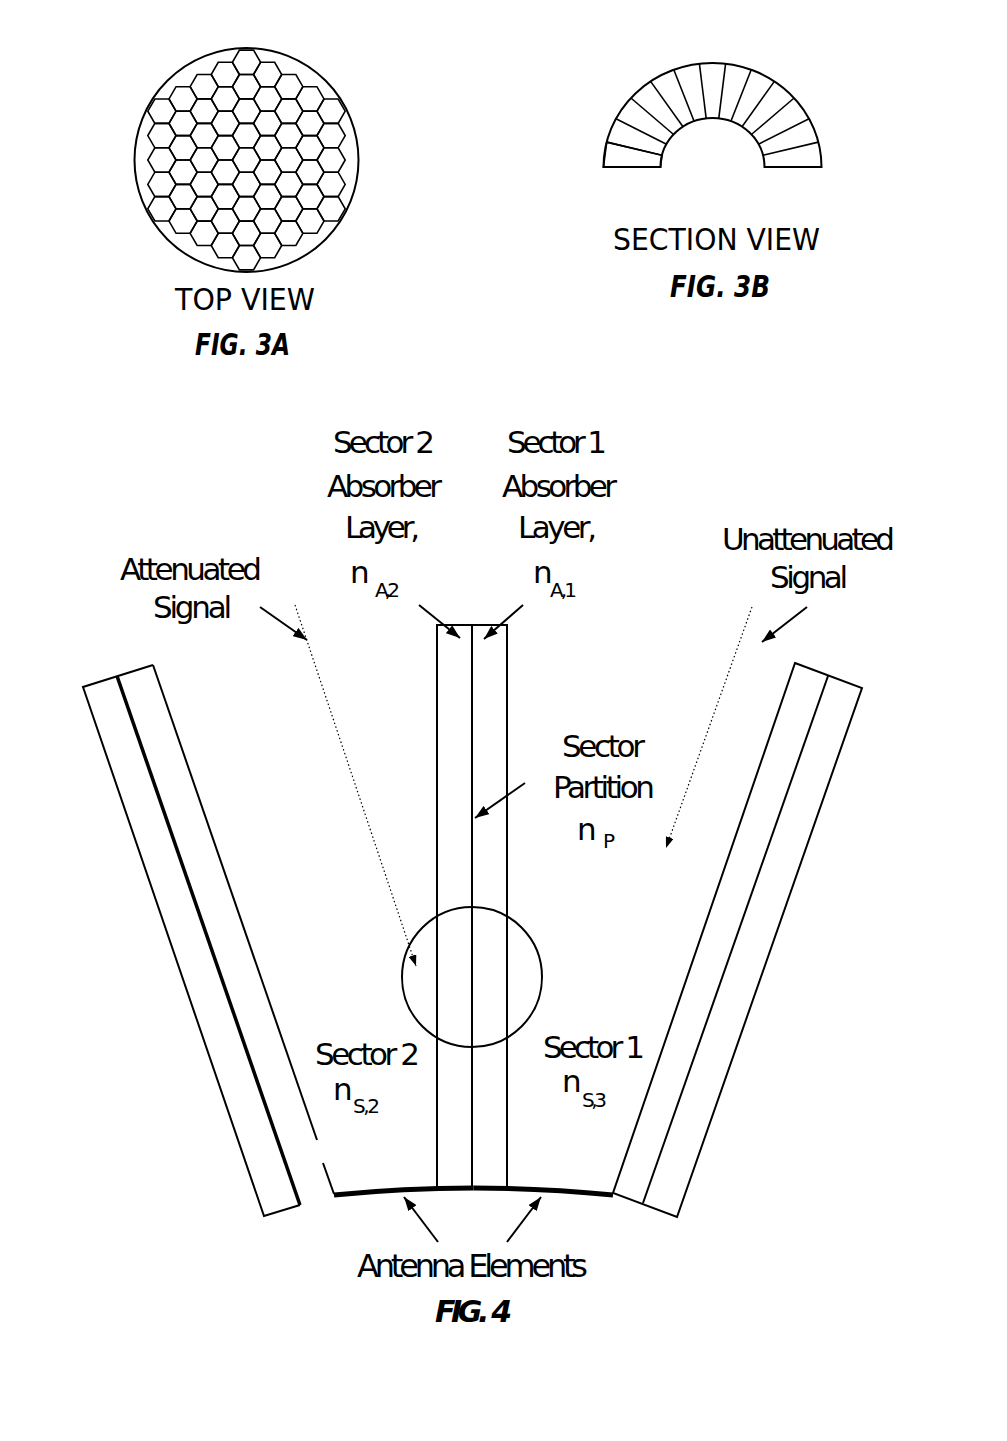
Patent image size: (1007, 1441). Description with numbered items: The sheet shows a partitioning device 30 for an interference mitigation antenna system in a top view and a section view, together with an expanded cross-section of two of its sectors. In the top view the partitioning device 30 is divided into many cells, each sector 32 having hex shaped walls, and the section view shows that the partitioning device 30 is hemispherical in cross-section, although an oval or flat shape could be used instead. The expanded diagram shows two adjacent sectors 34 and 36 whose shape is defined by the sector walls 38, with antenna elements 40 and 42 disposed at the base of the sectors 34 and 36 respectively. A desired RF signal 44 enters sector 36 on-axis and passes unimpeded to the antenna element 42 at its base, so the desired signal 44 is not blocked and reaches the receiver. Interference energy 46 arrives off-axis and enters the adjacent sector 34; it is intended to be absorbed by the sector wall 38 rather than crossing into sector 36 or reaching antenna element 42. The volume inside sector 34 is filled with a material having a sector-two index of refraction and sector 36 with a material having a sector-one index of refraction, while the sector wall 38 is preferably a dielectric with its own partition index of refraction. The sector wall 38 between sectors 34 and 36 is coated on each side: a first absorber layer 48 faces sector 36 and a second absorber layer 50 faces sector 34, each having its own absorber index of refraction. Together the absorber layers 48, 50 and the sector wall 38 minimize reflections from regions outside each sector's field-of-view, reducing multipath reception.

In FIG. 3A, the partitioning device 30 is at (189, 48).
In FIG. 3B, the partitioning device 30 is at (631, 75).
In FIG. 3A, the sector 32 is at (166, 209).
In FIG. 3B, the sector 32 is at (633, 158).
In FIG. 4, the sector 34 is at (208, 940).
In FIG. 4, the sector 36 is at (737, 940).
In FIG. 4, the sector wall 38 is at (218, 969).
In FIG. 4, the antenna element 40 is at (415, 1185).
In FIG. 4, the antenna element 42 is at (527, 1185).
In FIG. 4, the desired RF signal 44 is at (735, 660).
In FIG. 4, the interference energy 46 is at (332, 713).
In FIG. 4, the first absorber layer 48 is at (490, 713).
In FIG. 4, the second absorber layer 50 is at (455, 713).